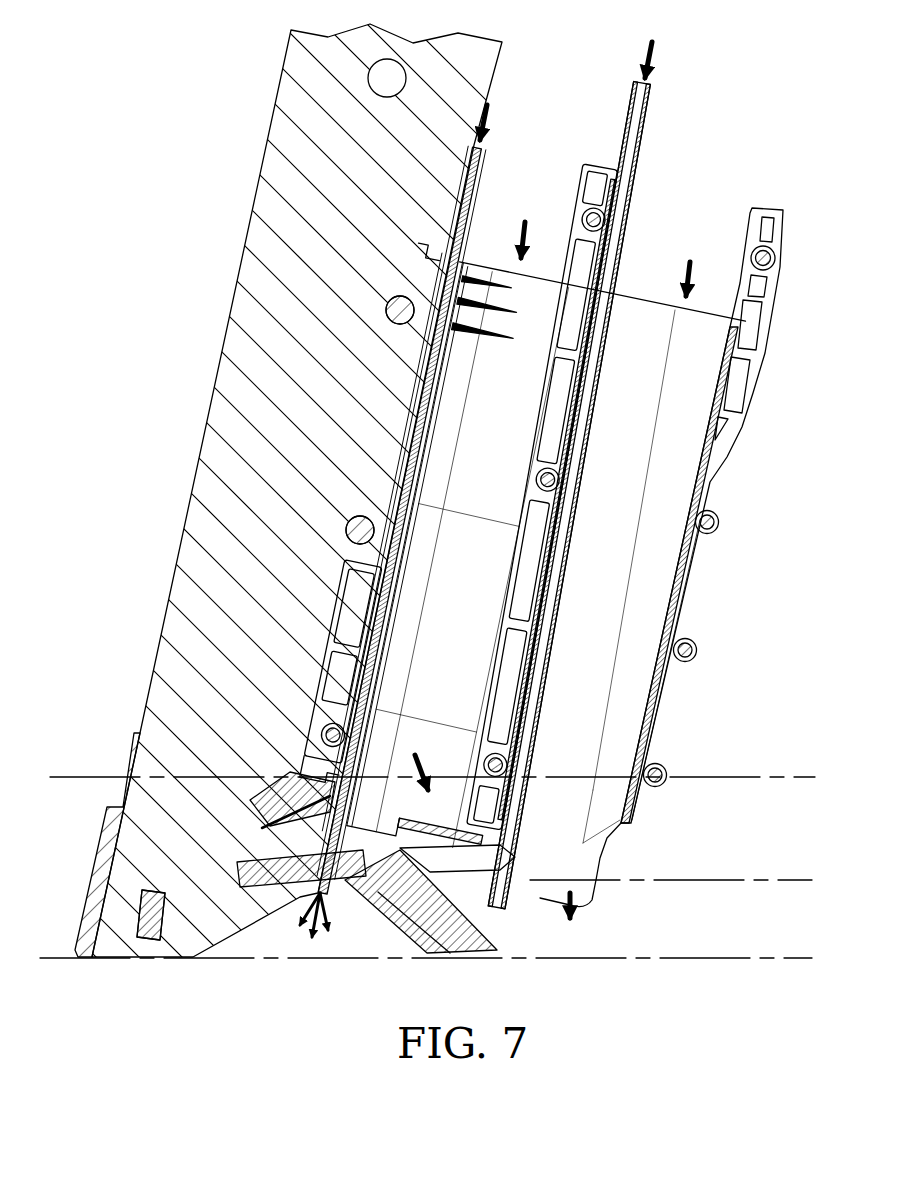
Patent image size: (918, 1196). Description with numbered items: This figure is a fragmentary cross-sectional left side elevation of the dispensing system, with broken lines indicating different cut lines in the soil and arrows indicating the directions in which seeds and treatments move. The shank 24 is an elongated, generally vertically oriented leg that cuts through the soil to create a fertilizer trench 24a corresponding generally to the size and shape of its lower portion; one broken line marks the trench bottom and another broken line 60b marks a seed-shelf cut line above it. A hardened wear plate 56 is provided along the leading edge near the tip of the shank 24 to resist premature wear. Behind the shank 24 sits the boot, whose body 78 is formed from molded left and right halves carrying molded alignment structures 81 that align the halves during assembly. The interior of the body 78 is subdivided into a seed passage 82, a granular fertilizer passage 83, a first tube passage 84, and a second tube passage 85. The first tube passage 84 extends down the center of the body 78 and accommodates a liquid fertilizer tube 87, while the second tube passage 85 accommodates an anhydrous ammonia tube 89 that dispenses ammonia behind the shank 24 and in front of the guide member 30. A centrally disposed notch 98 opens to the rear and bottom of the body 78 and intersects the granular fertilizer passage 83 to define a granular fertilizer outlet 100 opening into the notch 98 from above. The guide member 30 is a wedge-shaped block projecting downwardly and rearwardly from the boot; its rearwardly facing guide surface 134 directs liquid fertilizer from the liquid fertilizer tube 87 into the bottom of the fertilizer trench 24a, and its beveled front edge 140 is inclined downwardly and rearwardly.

The shank 24 is at (212, 255).
The fertilizer trench 24a is at (712, 955).
The hardened wear plate 56 is at (100, 880).
The anhydrous ammonia tube 89 is at (484, 160).
The seed passage 82 is at (525, 203).
The second tube passage 85 is at (467, 250).
The liquid fertilizer tube 87 is at (636, 108).
The first tube passage 84 is at (647, 168).
The granular fertilizer passage 83 is at (685, 238).
The molded alignment structures 81 is at (703, 630).
The body 78 is at (683, 696).
The notch 98 is at (617, 847).
The reference plane 60b is at (712, 878).
The granular fertilizer outlet 100 is at (583, 883).
The guide surface 134 is at (507, 940).
The guide member 30 is at (502, 948).
The beveled front edge 140 is at (410, 930).